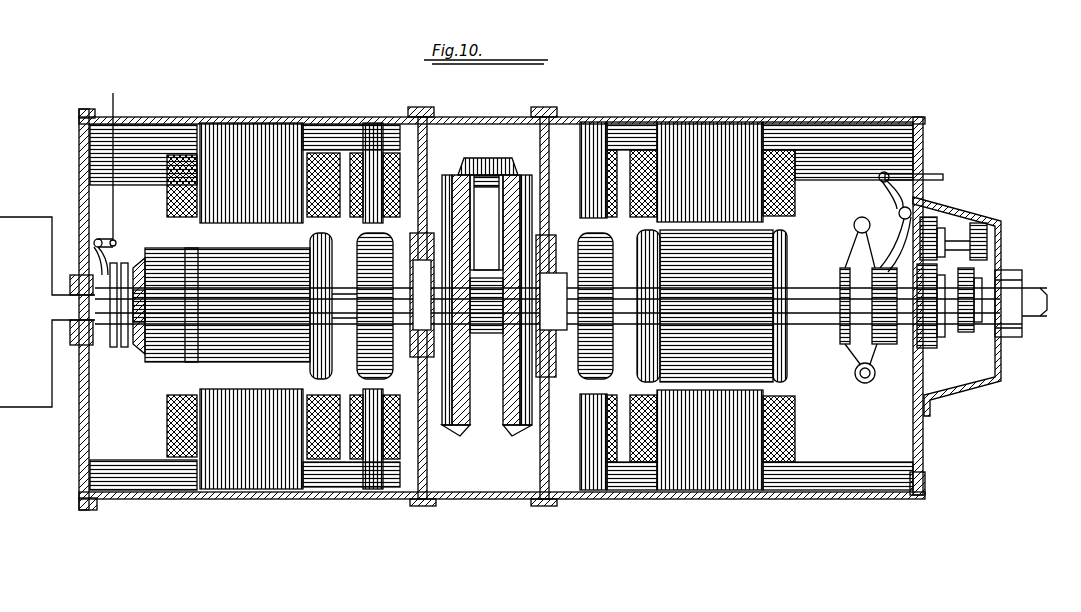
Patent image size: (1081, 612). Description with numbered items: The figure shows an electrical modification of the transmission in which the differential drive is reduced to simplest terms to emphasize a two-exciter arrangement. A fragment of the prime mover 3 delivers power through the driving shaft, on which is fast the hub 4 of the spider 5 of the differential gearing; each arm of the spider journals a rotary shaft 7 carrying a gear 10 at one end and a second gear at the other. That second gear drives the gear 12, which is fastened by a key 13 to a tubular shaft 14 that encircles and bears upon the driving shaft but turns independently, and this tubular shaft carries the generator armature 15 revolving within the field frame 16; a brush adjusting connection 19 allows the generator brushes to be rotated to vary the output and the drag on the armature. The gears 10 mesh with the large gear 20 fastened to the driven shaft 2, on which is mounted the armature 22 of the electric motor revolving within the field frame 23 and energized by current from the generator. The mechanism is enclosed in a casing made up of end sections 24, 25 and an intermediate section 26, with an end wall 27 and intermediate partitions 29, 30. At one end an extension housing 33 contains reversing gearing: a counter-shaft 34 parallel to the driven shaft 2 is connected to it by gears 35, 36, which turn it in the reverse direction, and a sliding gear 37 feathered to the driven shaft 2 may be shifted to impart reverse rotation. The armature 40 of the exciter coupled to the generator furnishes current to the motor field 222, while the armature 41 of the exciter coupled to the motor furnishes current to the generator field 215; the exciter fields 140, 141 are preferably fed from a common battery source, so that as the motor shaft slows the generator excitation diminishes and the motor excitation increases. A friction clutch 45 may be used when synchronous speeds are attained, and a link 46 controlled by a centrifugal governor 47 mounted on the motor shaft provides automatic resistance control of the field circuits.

The driven shaft 2 is at (1036, 288).
The prime mover 3 is at (33, 217).
The hub 4 is at (497, 335).
The spider 5 is at (510, 242).
The rotary shaft 7 is at (520, 254).
The gear 10 is at (470, 163).
The gear 12 is at (464, 436).
The key 13 is at (155, 352).
The tubular shaft 14 is at (388, 360).
The armature 15 is at (227, 305).
The field frame 16 is at (240, 128).
The brush adjusting connection 19 is at (116, 104).
The large gear 20 is at (509, 436).
The armature 22 is at (712, 306).
The field frame 23 is at (916, 162).
The end section 24 is at (320, 122).
The end section 25 is at (700, 120).
The intermediate section 26 is at (524, 117).
The end wall 27 is at (88, 150).
The intermediate partition 29 is at (432, 507).
The intermediate partition 30 is at (552, 506).
The extension housing 33 is at (974, 211).
The counter-shaft 34 is at (990, 241).
The gear 35 is at (943, 180).
The gear 36 is at (928, 338).
The sliding gear 37 is at (963, 333).
The armature 40 is at (333, 365).
The armature 41 is at (613, 378).
The friction clutch 45 is at (133, 352).
The link 46 is at (946, 172).
The centrifugal governor 47 is at (868, 384).
The exciter field 140 is at (352, 240).
The exciter field 141 is at (630, 124).
The generator field 215 is at (190, 247).
The motor field 222 is at (792, 216).